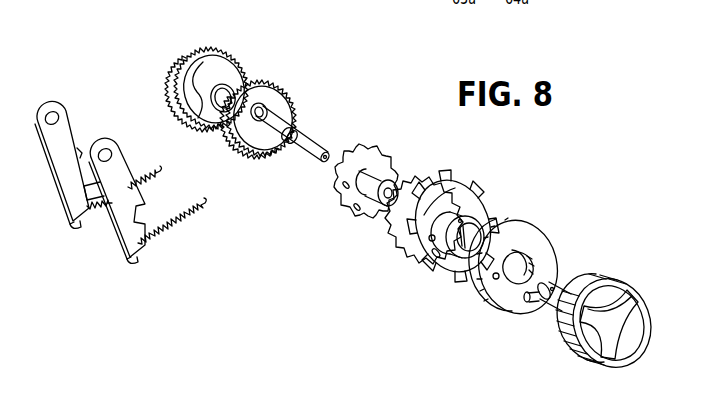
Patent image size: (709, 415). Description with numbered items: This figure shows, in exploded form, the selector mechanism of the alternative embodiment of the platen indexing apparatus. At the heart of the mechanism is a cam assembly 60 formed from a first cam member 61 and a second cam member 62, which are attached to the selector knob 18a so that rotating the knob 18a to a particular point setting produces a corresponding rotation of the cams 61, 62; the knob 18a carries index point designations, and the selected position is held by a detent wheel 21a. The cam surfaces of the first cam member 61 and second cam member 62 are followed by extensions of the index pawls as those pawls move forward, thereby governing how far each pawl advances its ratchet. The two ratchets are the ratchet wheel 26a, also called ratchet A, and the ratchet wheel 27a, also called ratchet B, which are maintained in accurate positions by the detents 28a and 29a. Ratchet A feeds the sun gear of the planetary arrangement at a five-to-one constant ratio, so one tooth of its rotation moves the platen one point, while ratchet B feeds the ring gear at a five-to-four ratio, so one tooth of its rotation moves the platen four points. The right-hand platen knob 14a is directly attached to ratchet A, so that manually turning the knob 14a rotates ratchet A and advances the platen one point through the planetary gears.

The right-hand platen knob 14a is at (627, 286).
The selector knob 18a is at (542, 240).
The detent wheel 21a is at (376, 158).
The ratchet wheel 26a is at (275, 111).
The ratchet wheel 27a is at (214, 75).
The detent 28a is at (118, 173).
The detent 29a is at (80, 151).
The cam assembly 60 is at (429, 213).
The first cam member 61 is at (473, 208).
The second cam member 62 is at (428, 186).
The ratchet A is at (285, 111).
The ratchet B is at (236, 78).